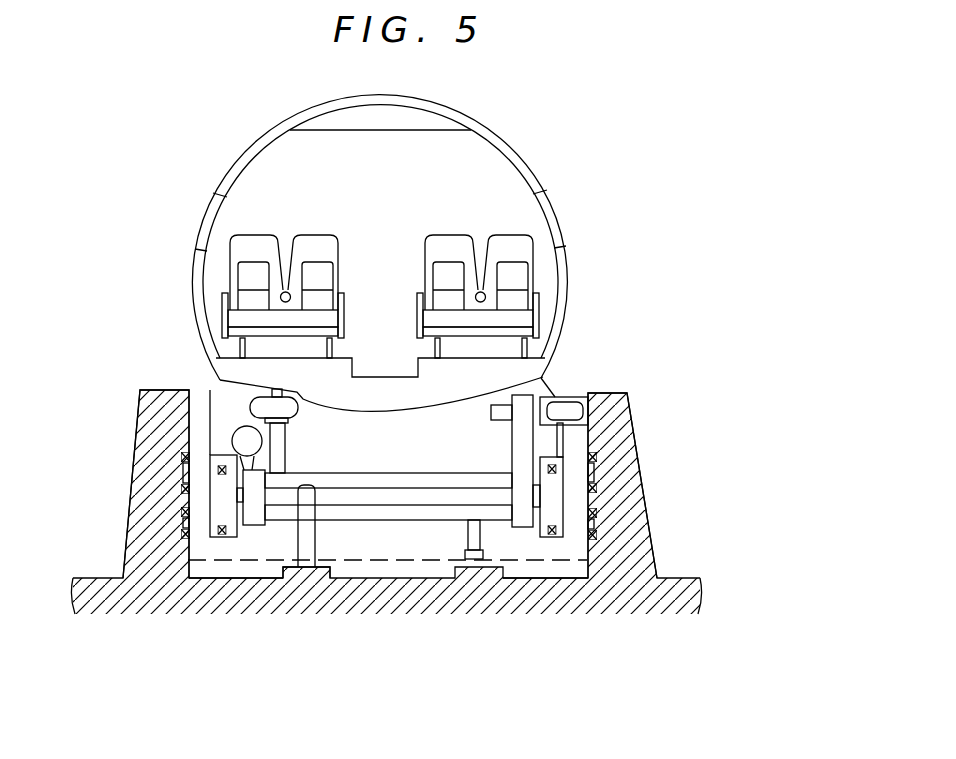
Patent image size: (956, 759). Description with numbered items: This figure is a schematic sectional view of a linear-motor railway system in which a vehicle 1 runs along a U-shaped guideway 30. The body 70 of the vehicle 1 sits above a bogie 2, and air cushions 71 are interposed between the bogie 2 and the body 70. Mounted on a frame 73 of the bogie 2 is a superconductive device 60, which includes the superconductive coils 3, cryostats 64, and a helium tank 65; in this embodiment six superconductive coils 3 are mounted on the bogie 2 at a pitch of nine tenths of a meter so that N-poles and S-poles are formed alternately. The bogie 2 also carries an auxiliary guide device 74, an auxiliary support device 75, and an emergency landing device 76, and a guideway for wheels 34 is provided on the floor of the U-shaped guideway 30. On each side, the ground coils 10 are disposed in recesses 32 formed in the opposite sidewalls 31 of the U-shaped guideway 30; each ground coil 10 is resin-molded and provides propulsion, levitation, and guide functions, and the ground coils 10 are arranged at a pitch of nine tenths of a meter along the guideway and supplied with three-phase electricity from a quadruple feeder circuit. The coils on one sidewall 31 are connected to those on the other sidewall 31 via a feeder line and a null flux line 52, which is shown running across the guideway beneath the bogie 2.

The vehicle 1 is at (417, 237).
The bogie 2 is at (388, 461).
The superconductive coils 3 is at (218, 512).
The ground coils 10 is at (182, 452).
The U-shaped guideway 30 is at (365, 510).
The sidewalls 31 is at (148, 520).
The recesses 32 is at (596, 498).
The guideway for wheels 34 is at (303, 568).
The null flux line 52 is at (363, 562).
The superconductive device 60 is at (556, 470).
The cryostats 64 is at (238, 517).
The helium tank 65 is at (255, 400).
The body 70 is at (547, 182).
The air cushions 71 is at (235, 428).
The frame 73 is at (305, 532).
The auxiliary guide device 74 is at (558, 415).
The auxiliary support device 75 is at (298, 535).
The emergency landing device 76 is at (472, 540).